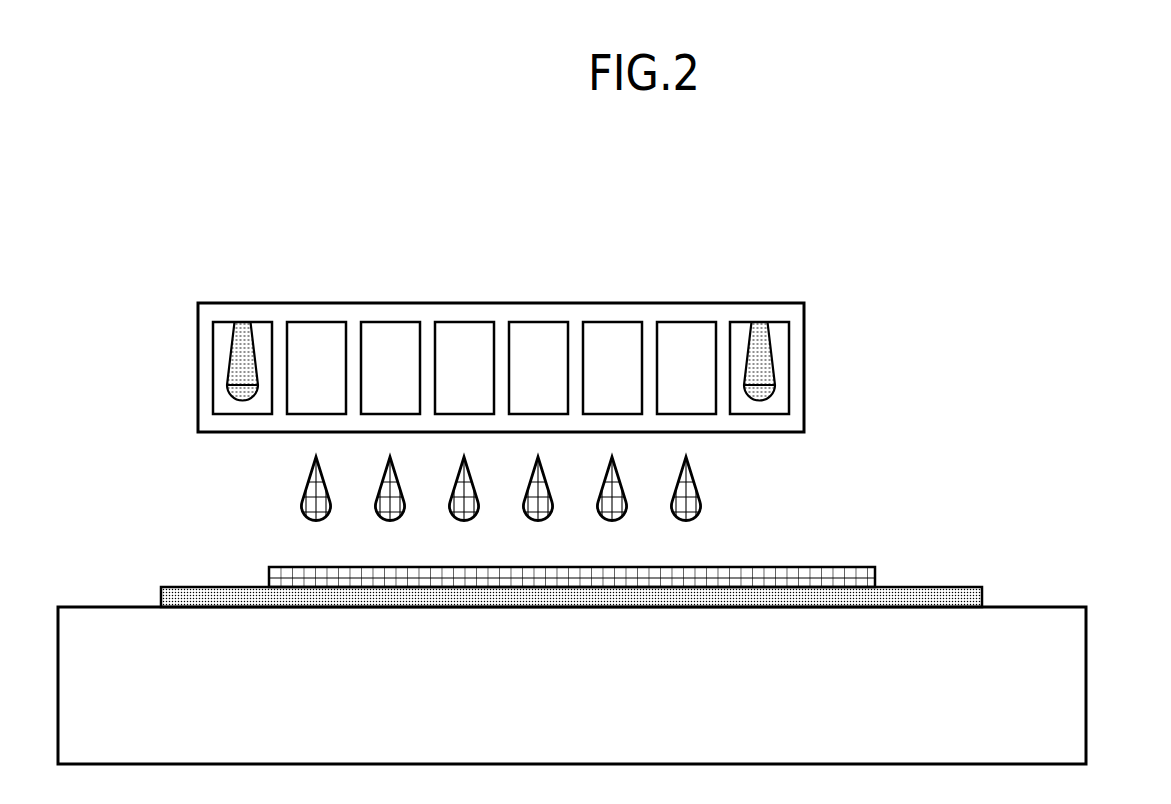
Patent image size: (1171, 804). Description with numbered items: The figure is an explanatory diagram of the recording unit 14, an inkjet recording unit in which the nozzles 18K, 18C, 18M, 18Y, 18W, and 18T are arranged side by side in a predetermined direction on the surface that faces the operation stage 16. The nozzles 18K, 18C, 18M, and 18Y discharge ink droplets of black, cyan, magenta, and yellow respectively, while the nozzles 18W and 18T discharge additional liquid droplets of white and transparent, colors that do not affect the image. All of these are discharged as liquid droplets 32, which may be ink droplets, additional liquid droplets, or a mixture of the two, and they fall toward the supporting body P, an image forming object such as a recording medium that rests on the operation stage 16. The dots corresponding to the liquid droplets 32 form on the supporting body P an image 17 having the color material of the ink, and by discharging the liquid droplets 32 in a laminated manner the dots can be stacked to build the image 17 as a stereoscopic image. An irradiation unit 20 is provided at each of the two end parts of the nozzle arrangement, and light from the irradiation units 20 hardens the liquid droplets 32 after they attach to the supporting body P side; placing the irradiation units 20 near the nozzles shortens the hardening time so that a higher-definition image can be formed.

The recording unit 14 is at (805, 352).
The irradiation unit 20 is at (245, 328).
The nozzle 18K is at (316, 330).
The nozzle 18C is at (391, 330).
The nozzle 18M is at (466, 330).
The nozzle 18Y is at (540, 330).
The nozzle 18W is at (614, 330).
The nozzle 18T is at (688, 330).
The liquid droplets 32 is at (698, 485).
The image 17 is at (877, 578).
The supporting body P is at (983, 598).
The operation stage 16 is at (1077, 688).